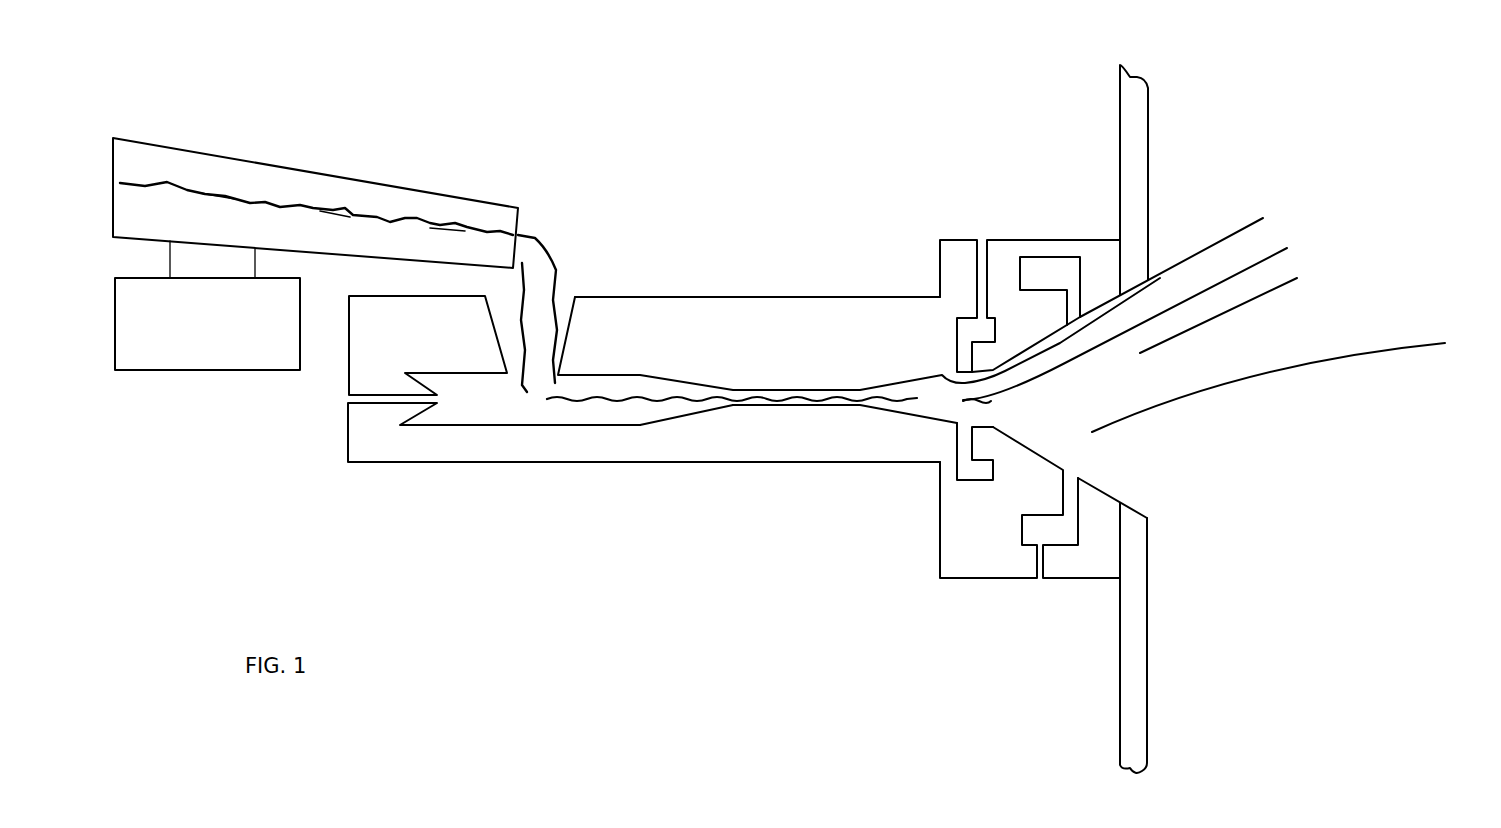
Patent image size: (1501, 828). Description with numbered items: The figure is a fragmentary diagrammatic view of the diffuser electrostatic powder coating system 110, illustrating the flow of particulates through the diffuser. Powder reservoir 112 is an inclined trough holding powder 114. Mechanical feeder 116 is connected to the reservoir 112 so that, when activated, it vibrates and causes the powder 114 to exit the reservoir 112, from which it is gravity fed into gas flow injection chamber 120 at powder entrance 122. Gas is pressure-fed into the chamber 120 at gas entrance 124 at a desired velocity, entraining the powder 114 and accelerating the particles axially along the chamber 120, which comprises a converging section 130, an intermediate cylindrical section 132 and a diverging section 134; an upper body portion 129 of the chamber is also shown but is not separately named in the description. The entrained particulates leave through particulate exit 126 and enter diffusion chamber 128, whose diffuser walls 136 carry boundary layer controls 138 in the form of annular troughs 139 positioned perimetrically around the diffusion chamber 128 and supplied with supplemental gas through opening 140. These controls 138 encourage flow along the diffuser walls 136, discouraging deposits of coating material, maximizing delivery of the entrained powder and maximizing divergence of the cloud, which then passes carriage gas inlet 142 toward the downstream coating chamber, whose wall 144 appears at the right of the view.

The fiber forming apparatus 110 is at (685, 172).
The powder reservoir 112 is at (147, 144).
The powder 114 is at (387, 217).
The mechanical feeder 116 is at (300, 343).
The gas flow injection chamber 120 is at (575, 390).
The powder entrance 122 is at (513, 373).
The gas entrance 124 is at (348, 402).
The particulate exit 126 is at (1147, 316).
The diffusion chamber 128 is at (1293, 380).
The upper body member 129 is at (812, 297).
The converging section 130 is at (658, 405).
The intermediate cylindrical section 132 is at (813, 405).
The diverging section 134 is at (1141, 287).
The diffuser walls 136 is at (1097, 488).
The boundary layer controls 138 is at (977, 562).
The annular troughs 139 is at (970, 470).
The opening 140 is at (982, 243).
The carriage gas inlet 142 is at (1242, 309).
The wall / shield 144 is at (1148, 138).